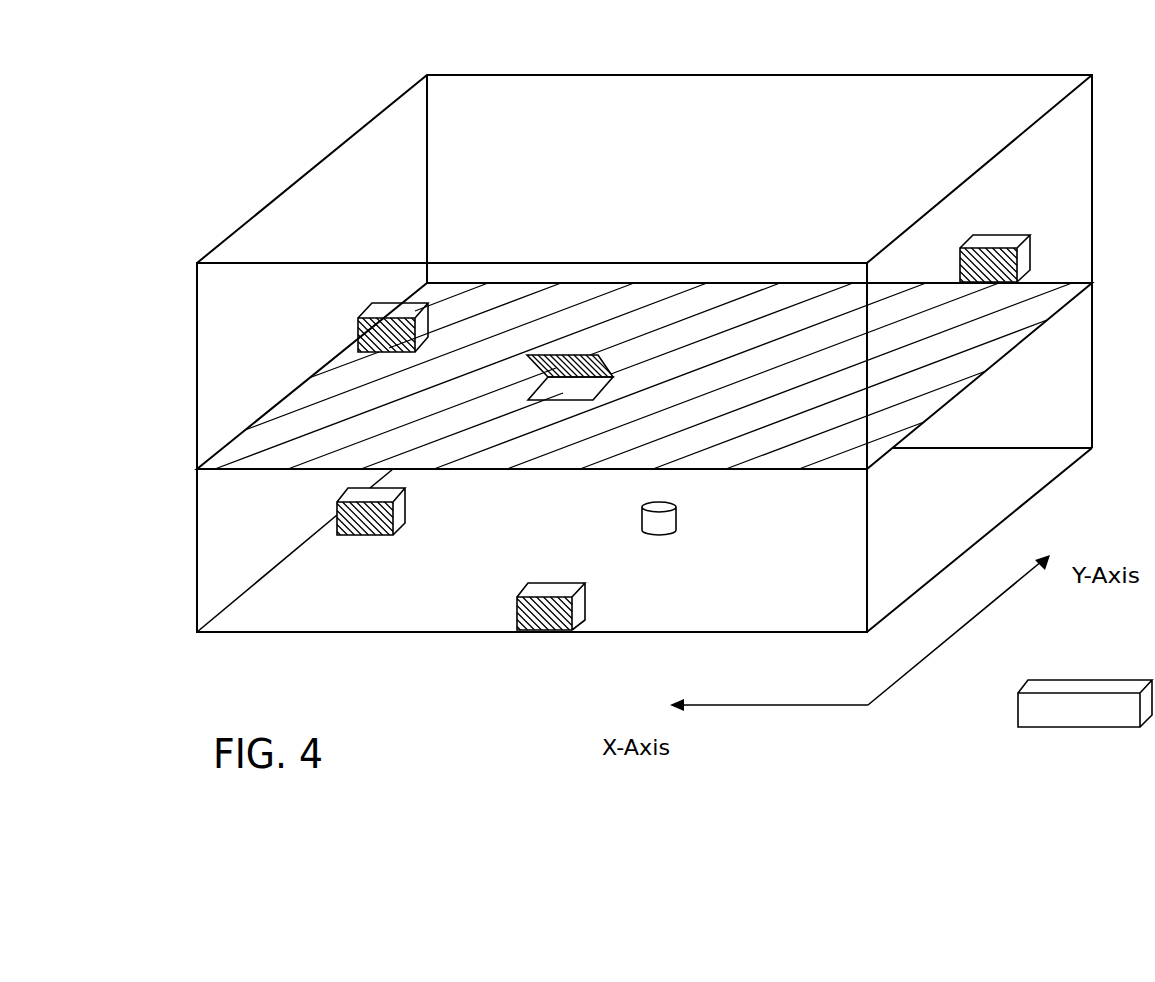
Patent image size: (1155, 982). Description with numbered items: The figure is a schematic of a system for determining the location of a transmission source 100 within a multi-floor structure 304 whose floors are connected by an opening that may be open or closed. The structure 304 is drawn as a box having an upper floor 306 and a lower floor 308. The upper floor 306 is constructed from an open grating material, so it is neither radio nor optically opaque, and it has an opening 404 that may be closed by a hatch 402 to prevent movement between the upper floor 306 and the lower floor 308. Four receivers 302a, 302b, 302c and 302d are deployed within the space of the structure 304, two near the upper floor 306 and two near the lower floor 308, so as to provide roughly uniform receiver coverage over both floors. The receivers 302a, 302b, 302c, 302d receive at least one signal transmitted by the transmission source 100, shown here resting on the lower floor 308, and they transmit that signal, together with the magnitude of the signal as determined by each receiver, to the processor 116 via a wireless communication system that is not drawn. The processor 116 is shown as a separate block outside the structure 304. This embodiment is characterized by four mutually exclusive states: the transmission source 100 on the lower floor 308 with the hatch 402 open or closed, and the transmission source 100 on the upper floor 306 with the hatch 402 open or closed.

The transmission source 100 is at (677, 527).
The processor 116 is at (1068, 728).
The receiver 302a is at (517, 632).
The receiver 302b is at (335, 509).
The receiver 302c is at (372, 306).
The receiver 302d is at (1008, 233).
The multi-floor structure 304 is at (780, 73).
The upper floor 306 is at (1025, 338).
The lower floor 308 is at (1042, 487).
The hatch 402 is at (580, 350).
The opening 404 is at (580, 395).